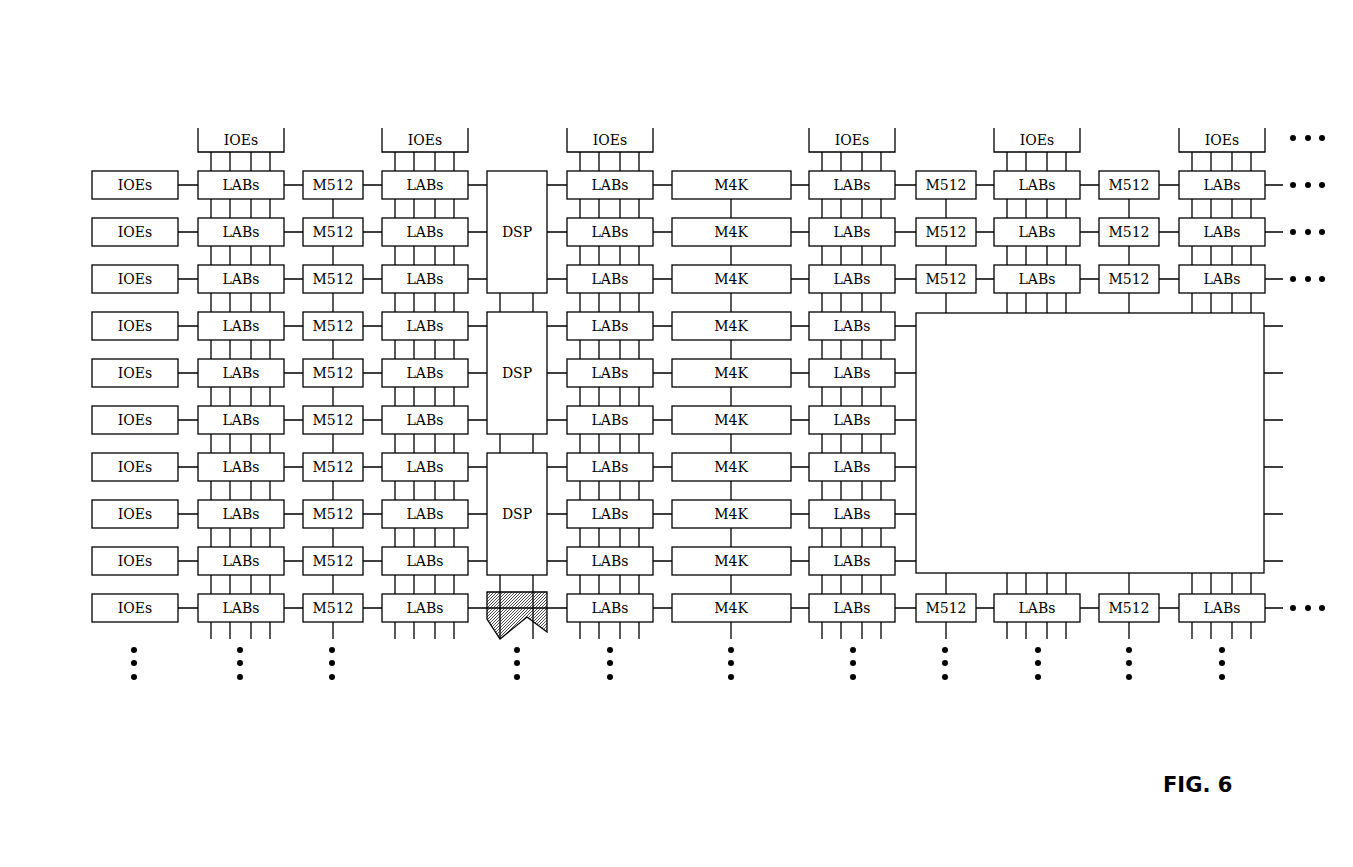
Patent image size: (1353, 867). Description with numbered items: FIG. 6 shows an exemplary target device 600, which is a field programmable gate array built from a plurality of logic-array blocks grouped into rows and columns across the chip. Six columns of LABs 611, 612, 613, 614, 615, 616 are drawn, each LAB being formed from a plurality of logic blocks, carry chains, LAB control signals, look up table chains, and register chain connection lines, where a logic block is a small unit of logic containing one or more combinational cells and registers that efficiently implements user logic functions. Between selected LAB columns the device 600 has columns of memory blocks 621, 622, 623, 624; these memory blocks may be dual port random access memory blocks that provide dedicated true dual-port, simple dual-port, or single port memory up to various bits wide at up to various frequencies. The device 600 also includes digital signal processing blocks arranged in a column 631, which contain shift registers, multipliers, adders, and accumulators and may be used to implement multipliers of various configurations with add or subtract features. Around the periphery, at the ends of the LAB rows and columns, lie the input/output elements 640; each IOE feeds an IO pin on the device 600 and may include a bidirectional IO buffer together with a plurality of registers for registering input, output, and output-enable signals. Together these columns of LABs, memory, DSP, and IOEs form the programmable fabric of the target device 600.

The device 600 is at (158, 95).
The input/output elements 640 is at (192, 145).
The column of LABs 611 is at (227, 648).
The column of LABs 612 is at (410, 648).
The column of LABs 613 is at (596, 648).
The column of LABs 614 is at (827, 648).
The column of LABs 615 is at (1020, 648).
The column of LABs 616 is at (1203, 648).
The column of memory blocks 621 is at (352, 162).
The column of memory blocks 622 is at (736, 163).
The column of memory blocks 623 is at (957, 163).
The column of memory blocks 624 is at (1137, 163).
The column of DSP blocks 631 is at (530, 163).